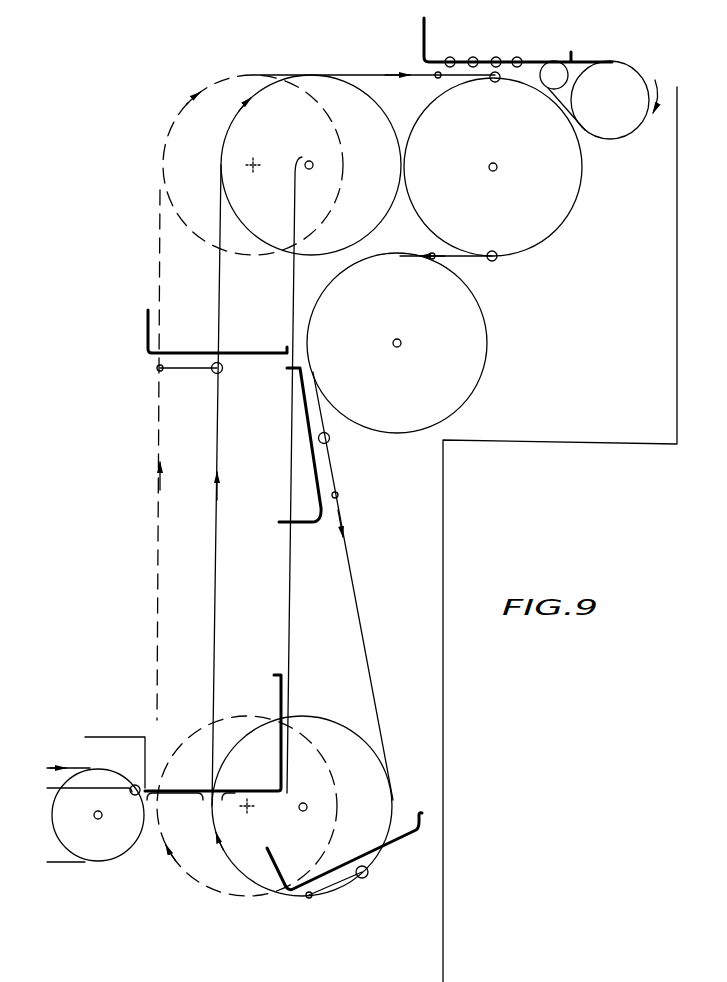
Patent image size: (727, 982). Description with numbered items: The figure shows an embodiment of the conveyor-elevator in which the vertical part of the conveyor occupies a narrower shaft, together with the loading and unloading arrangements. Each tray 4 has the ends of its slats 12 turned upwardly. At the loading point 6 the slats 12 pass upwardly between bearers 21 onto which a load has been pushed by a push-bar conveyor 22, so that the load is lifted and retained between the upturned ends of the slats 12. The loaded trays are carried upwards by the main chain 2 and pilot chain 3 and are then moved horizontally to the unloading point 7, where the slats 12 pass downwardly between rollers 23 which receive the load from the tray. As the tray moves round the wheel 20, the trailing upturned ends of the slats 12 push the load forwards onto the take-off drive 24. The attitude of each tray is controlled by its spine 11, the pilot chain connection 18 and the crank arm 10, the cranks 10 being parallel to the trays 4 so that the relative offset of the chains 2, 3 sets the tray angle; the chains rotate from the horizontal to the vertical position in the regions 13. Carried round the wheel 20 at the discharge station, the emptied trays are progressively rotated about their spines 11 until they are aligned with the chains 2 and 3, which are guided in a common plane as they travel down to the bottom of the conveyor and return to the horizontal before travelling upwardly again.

The main chain 2 is at (218, 423).
The pilot chain 3 is at (158, 422).
The tray 4 is at (434, 54).
The loading point 6 is at (79, 751).
The unloading point 7 is at (540, 54).
The crank arm 10 is at (462, 258).
The spine 11 is at (330, 440).
The slat 12 is at (410, 837).
The region 13 is at (344, 284).
The pilot chain connection 18 is at (338, 495).
The wheel 20 is at (563, 212).
The bearer 21 is at (177, 793).
The push-bar conveyor 22 is at (62, 865).
The roller 23 is at (475, 57).
The take-off drive 24 is at (588, 62).